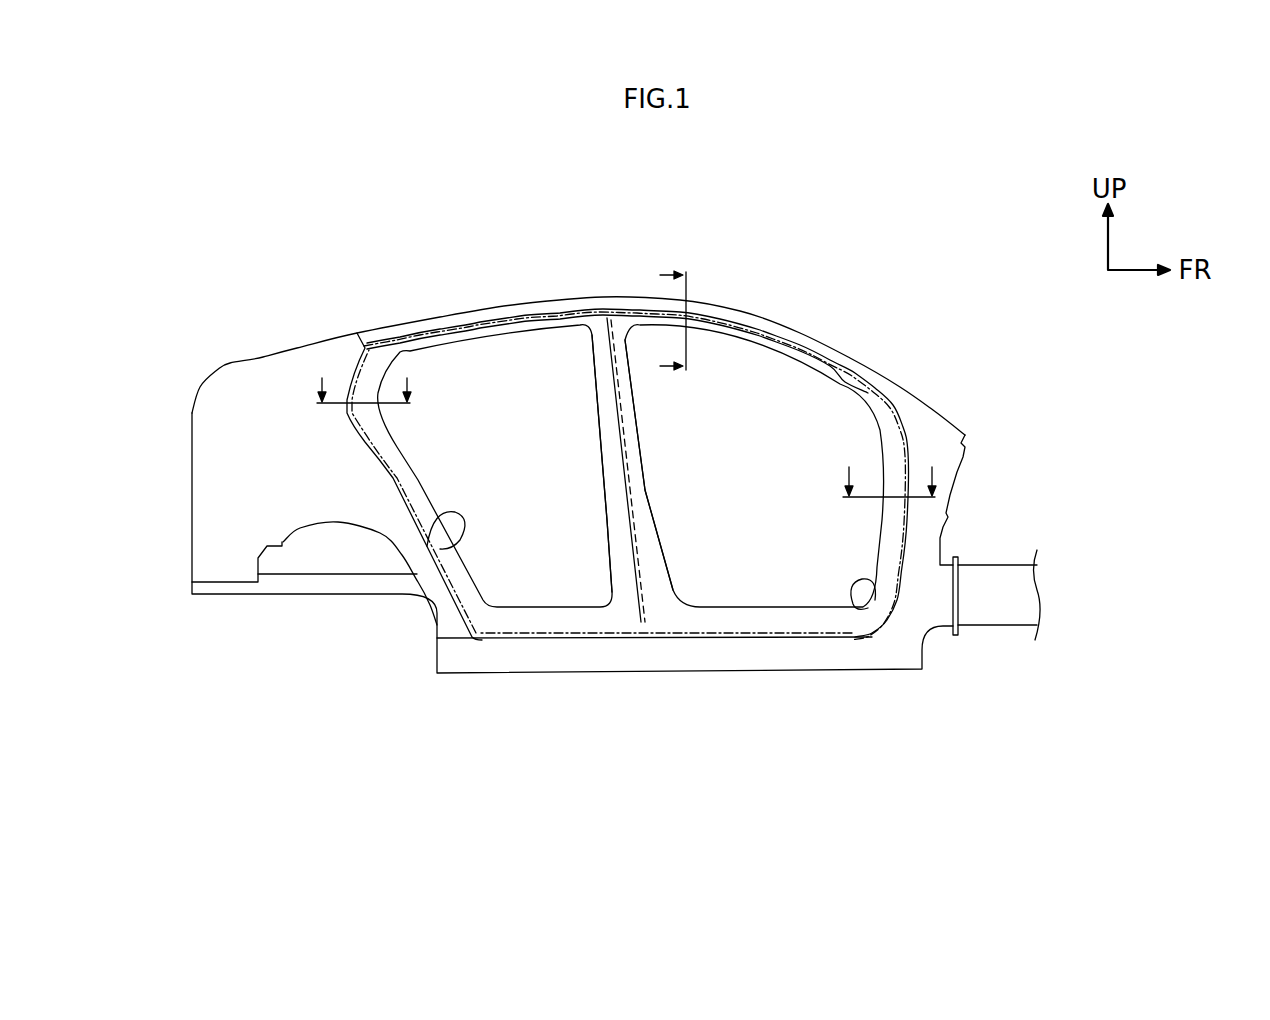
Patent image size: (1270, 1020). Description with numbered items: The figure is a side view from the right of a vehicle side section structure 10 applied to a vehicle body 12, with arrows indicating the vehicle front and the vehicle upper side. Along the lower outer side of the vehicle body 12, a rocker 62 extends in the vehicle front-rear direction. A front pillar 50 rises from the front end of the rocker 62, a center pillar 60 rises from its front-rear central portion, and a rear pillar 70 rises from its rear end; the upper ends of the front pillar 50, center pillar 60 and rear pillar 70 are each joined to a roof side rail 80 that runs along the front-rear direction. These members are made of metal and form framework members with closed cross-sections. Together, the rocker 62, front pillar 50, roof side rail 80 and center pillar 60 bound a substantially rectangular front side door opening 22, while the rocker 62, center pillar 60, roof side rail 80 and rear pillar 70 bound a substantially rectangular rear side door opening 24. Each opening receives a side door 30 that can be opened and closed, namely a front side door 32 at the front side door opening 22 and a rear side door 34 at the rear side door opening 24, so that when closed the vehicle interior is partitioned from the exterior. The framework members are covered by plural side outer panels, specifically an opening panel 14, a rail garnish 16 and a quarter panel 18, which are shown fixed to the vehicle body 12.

The vehicle side section structure 10 is at (845, 253).
The vehicle 12 is at (873, 322).
The opening panel 14 is at (575, 623).
The rail garnish 16 is at (769, 330).
The quarter panel 18 is at (270, 393).
The front side door opening 22 is at (880, 623).
The rear side door opening 24 is at (452, 538).
The side door 30 is at (623, 748).
The front side door 32 is at (695, 618).
The rear side door 34 is at (627, 618).
The front pillar 50 is at (917, 538).
The center pillar 60 is at (645, 492).
The rocker 62 is at (733, 655).
The rear pillar 70 is at (410, 480).
The roof side rail 80 is at (478, 313).